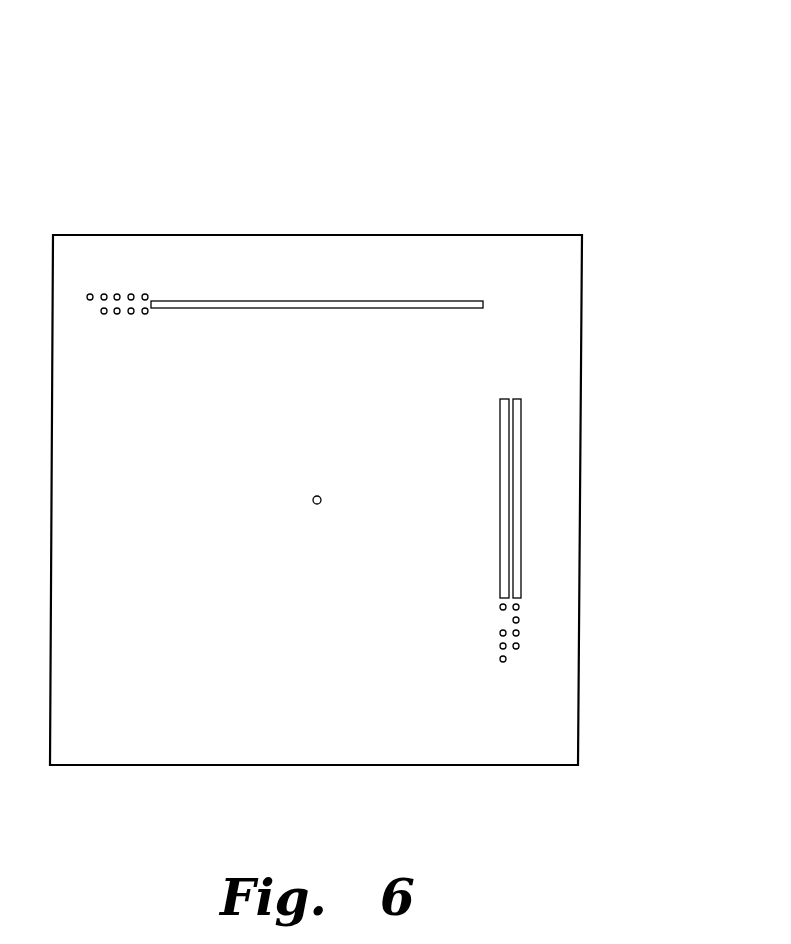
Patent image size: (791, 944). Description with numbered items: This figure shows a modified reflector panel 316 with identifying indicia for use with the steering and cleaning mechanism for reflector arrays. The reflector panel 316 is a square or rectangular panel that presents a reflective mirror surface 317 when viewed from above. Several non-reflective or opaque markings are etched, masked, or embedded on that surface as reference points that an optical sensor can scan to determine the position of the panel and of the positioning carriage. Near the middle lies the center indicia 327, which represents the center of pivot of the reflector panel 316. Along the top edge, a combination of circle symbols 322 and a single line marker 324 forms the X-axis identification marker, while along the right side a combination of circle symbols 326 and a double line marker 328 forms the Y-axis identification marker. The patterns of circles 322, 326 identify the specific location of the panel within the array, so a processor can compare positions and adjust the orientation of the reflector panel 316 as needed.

The reflector panel 316 is at (117, 75).
The reflective mirror surface 317 is at (319, 673).
The symbols 322 is at (97, 255).
The line markers 324 is at (442, 301).
The symbols 326 is at (552, 668).
The center indicia 327 is at (314, 497).
The line markers 328 is at (560, 437).